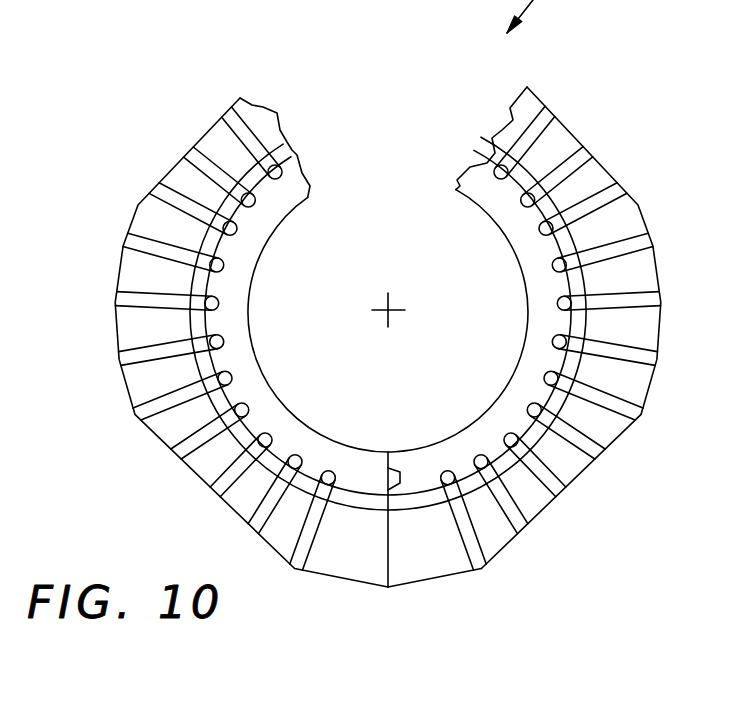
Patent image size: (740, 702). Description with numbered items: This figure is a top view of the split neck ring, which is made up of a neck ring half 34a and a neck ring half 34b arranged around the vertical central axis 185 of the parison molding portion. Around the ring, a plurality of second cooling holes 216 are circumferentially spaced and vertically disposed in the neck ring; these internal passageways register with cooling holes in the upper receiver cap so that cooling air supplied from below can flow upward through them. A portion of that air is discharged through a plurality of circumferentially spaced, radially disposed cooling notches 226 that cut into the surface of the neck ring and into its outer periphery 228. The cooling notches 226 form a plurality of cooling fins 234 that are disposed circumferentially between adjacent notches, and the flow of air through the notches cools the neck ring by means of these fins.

The neck ring half 34a is at (262, 250).
The neck ring half 34b is at (515, 252).
The central axis 185 is at (390, 307).
The second cooling holes 216 is at (483, 455).
The cooling notches 226 is at (478, 565).
The outer periphery 228 is at (538, 520).
The cooling fins 234 is at (496, 538).